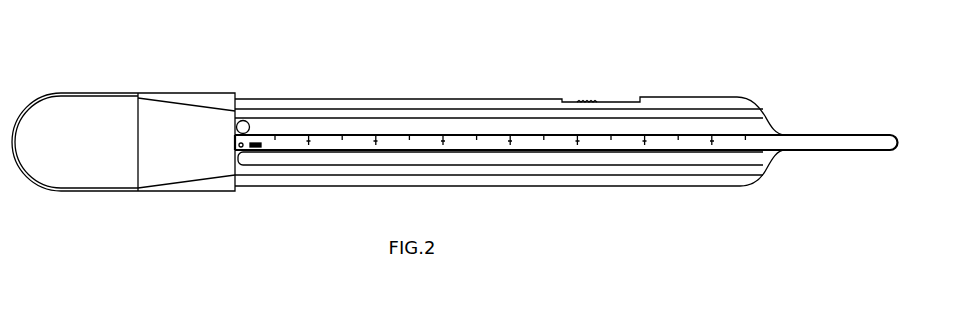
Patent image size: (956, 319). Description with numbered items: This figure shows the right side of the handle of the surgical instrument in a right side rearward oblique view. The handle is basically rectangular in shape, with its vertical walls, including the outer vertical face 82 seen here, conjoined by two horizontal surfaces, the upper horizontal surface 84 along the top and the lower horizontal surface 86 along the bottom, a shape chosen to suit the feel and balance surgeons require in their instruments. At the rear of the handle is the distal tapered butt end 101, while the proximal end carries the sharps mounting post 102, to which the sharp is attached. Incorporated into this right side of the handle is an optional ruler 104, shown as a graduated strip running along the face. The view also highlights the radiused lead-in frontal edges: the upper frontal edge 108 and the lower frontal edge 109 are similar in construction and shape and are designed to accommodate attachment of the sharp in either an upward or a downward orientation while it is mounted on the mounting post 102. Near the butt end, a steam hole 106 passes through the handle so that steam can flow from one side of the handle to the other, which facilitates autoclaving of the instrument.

The outer vertical face 82 is at (542, 124).
The upper horizontal surface 84 is at (458, 99).
The lower horizontal surface 86 is at (477, 187).
The distal tapered butt end 101 is at (83, 150).
The sharps mounting post 102 is at (837, 152).
The ruler 104 is at (352, 140).
The steam hole 106 is at (251, 121).
The upper frontal edge 108 is at (760, 98).
The lower frontal edge 109 is at (752, 189).